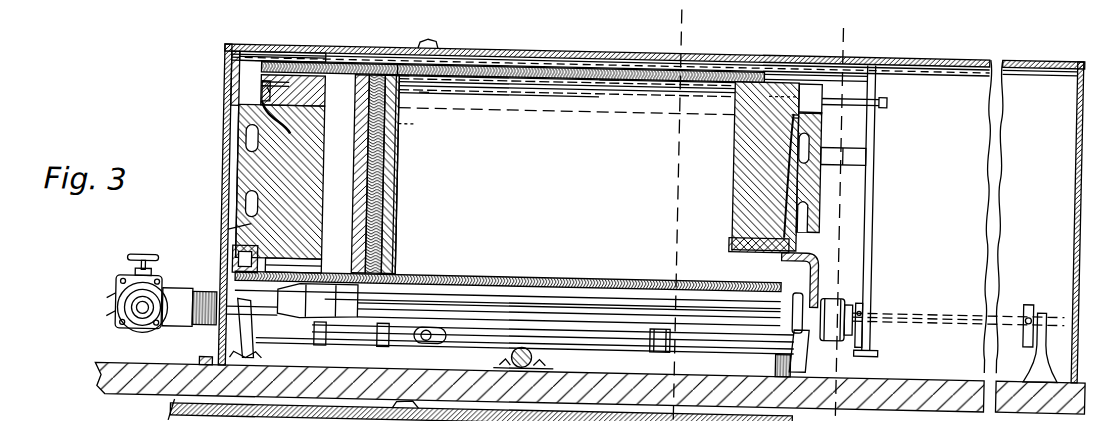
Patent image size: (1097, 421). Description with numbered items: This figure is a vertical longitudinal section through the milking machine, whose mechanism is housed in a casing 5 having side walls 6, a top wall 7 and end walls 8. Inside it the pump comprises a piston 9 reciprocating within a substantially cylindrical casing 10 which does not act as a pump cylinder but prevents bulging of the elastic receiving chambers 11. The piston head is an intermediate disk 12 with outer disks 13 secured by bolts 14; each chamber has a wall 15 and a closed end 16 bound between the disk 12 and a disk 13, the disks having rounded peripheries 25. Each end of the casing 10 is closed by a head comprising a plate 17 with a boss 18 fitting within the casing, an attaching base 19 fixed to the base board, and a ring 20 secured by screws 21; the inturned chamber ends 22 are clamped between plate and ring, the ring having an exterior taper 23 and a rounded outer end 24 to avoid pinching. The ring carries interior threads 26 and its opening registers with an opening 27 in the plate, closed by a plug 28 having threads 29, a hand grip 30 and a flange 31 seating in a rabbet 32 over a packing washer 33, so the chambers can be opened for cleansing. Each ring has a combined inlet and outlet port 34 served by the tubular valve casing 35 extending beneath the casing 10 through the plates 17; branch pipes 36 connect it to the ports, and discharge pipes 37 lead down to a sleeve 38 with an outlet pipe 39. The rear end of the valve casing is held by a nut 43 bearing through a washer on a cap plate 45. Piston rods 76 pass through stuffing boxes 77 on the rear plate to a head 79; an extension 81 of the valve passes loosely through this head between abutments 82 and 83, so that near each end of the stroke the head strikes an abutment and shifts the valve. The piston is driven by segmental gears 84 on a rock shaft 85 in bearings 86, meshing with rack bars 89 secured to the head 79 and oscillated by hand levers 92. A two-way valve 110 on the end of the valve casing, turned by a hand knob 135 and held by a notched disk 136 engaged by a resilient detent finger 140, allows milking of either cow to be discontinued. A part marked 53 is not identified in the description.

The casing 5 is at (940, 30).
The side walls 6 is at (796, 211).
The top wall 7 is at (573, 50).
The end walls 8 is at (282, 104).
The piston 9 is at (375, 166).
The casing 10 is at (490, 54).
The receiving chambers 11 is at (612, 72).
The intermediate disk 12 is at (387, 195).
The disks 13 is at (390, 217).
The bolts 14 is at (405, 120).
The wall 15 is at (612, 197).
The closed end 16 is at (388, 182).
The plate 17 is at (266, 70).
The boss 18 is at (286, 60).
The attaching base 19 is at (264, 356).
The ring 20 is at (318, 70).
The screws 21 is at (262, 82).
The inturned ends 22 is at (266, 95).
The taper 23 is at (392, 62).
The rounded outer end 24 is at (335, 148).
The rounded periphery 25 is at (427, 88).
The threads 26 is at (783, 113).
The opening 27 is at (248, 140).
The plug 28 is at (278, 163).
The threads 29 is at (232, 229).
The hand grip 30 is at (232, 168).
The flange 31 is at (243, 244).
The rabbet 32 is at (840, 72).
The packing washer 33 is at (268, 88).
The combined inlet and outlet port 34 is at (300, 262).
The valve casing 35 is at (628, 308).
The branch pipe 36 is at (225, 278).
The pipes 37 is at (380, 333).
The sleeve 38 is at (455, 335).
The outlet pipe 39 is at (440, 296).
The nut 43 is at (834, 290).
The cap plate 45 is at (810, 272).
The tapered body 53 is at (332, 301).
The piston rods 76 is at (813, 117).
The stuffing boxes 77 is at (806, 78).
The head 79 is at (878, 228).
The extension 81 is at (912, 309).
The abutment 82 is at (868, 297).
The abutment 83 is at (1036, 288).
The segmental gears 84 is at (534, 286).
The rock shaft 85 is at (540, 350).
The bearings 86 is at (577, 363).
The rack bars 89 is at (862, 147).
The hand levers 92 is at (432, 36).
The two-way valve 110 is at (181, 312).
The hand knob 135 is at (148, 256).
The disk 136 is at (134, 278).
The detent finger 140 is at (121, 290).